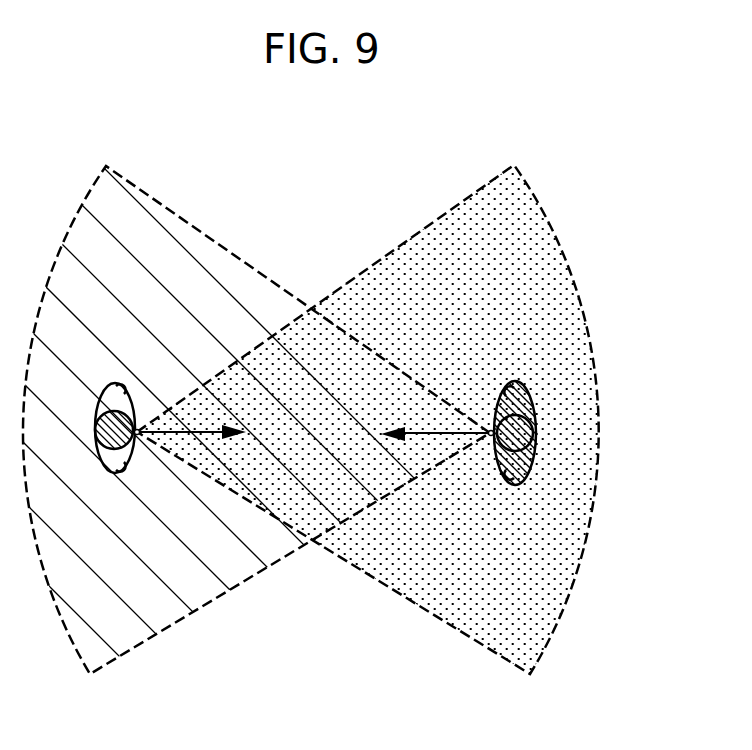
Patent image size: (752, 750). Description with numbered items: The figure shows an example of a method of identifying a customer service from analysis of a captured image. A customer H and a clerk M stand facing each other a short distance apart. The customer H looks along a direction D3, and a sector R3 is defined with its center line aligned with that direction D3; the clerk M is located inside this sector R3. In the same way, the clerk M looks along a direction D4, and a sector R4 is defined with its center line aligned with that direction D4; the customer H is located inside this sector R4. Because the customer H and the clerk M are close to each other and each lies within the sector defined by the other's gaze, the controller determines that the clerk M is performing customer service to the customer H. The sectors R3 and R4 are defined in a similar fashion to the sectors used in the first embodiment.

The sector R3 is at (581, 304).
The sector R4 is at (208, 238).
The customer H is at (104, 389).
The clerk M is at (536, 425).
The direction D3 is at (191, 421).
The direction D4 is at (437, 422).